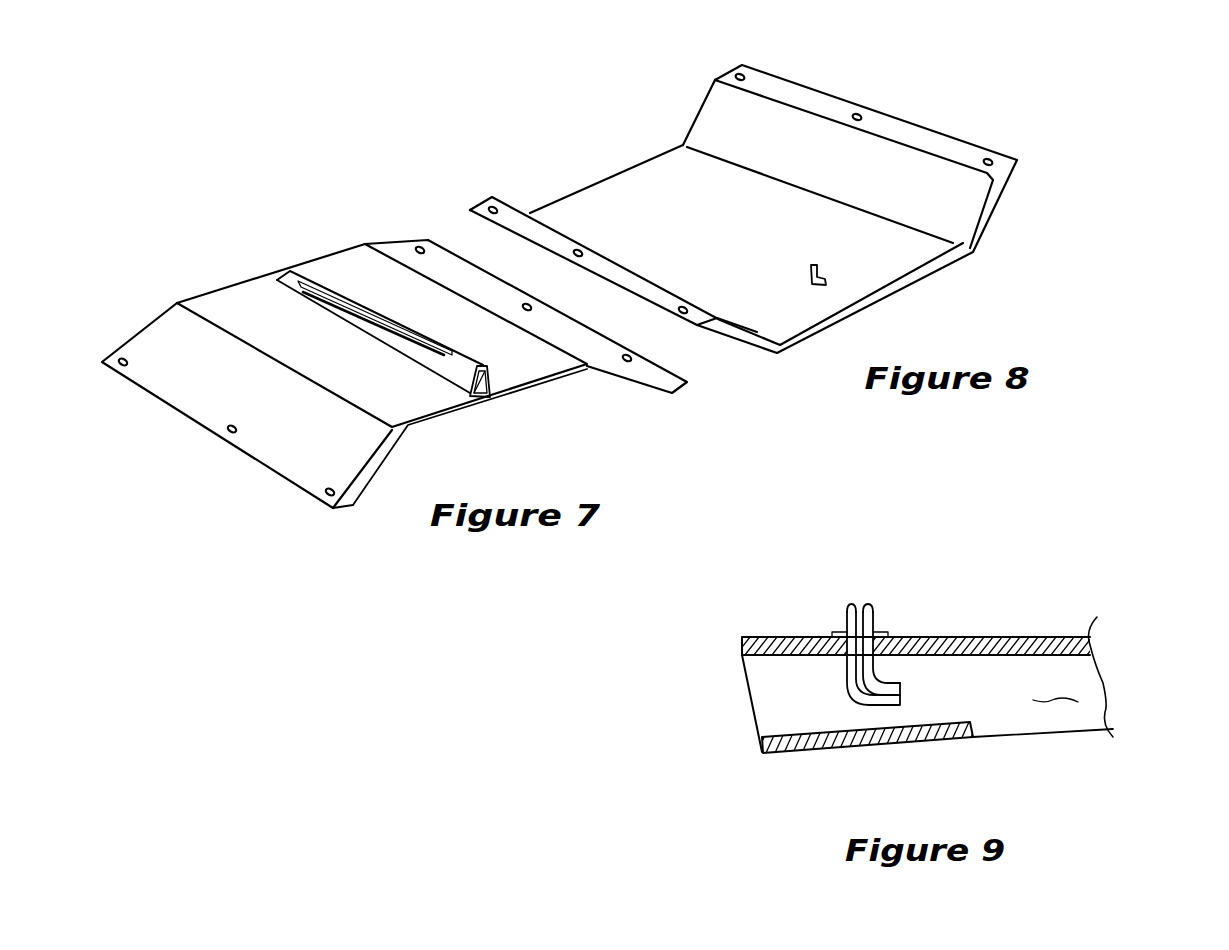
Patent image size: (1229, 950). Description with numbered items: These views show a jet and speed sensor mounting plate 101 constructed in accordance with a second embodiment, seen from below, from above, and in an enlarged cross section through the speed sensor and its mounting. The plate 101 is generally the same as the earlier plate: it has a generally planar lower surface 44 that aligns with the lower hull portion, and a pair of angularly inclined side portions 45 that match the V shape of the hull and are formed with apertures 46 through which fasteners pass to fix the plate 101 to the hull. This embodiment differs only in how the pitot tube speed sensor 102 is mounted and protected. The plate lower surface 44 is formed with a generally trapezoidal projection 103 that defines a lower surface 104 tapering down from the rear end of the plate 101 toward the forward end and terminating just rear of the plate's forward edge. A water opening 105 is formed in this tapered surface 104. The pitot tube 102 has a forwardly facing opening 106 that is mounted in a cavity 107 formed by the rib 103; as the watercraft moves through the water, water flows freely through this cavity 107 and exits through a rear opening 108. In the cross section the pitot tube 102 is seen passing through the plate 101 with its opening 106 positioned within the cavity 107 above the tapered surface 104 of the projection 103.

In FIG. 7, the lower surface 44 is at (225, 298).
In FIG. 7, the side portions 45 is at (170, 387).
In FIG. 8, the side portions 45 is at (620, 265).
In FIG. 7, the apertures 46 is at (683, 305).
In FIG. 8, the apertures 46 is at (745, 74).
In FIG. 7, the jet and speed sensor mounting plate 101 is at (386, 325).
In FIG. 8, the jet and speed sensor mounting plate 101 is at (743, 196).
In FIG. 9, the jet and speed sensor mounting plate 101 is at (1050, 630).
In FIG. 8, the pitot tube speed sensor 102 is at (834, 268).
In FIG. 9, the pitot tube speed sensor 102 is at (925, 621).
In FIG. 7, the trapezoidal projection 103 is at (497, 382).
In FIG. 9, the trapezoidal projection 103 is at (877, 739).
In FIG. 7, the lower surface of projection 104 is at (457, 357).
In FIG. 9, the lower surface of projection 104 is at (842, 752).
In FIG. 7, the water opening 105 is at (355, 300).
In FIG. 9, the water opening 105 is at (978, 737).
In FIG. 9, the forwardly facing opening 106 is at (900, 688).
In FIG. 9, the cavity 107 is at (1057, 687).
In FIG. 7, the rear opening 108 is at (483, 350).
In FIG. 9, the rear opening 108 is at (743, 657).